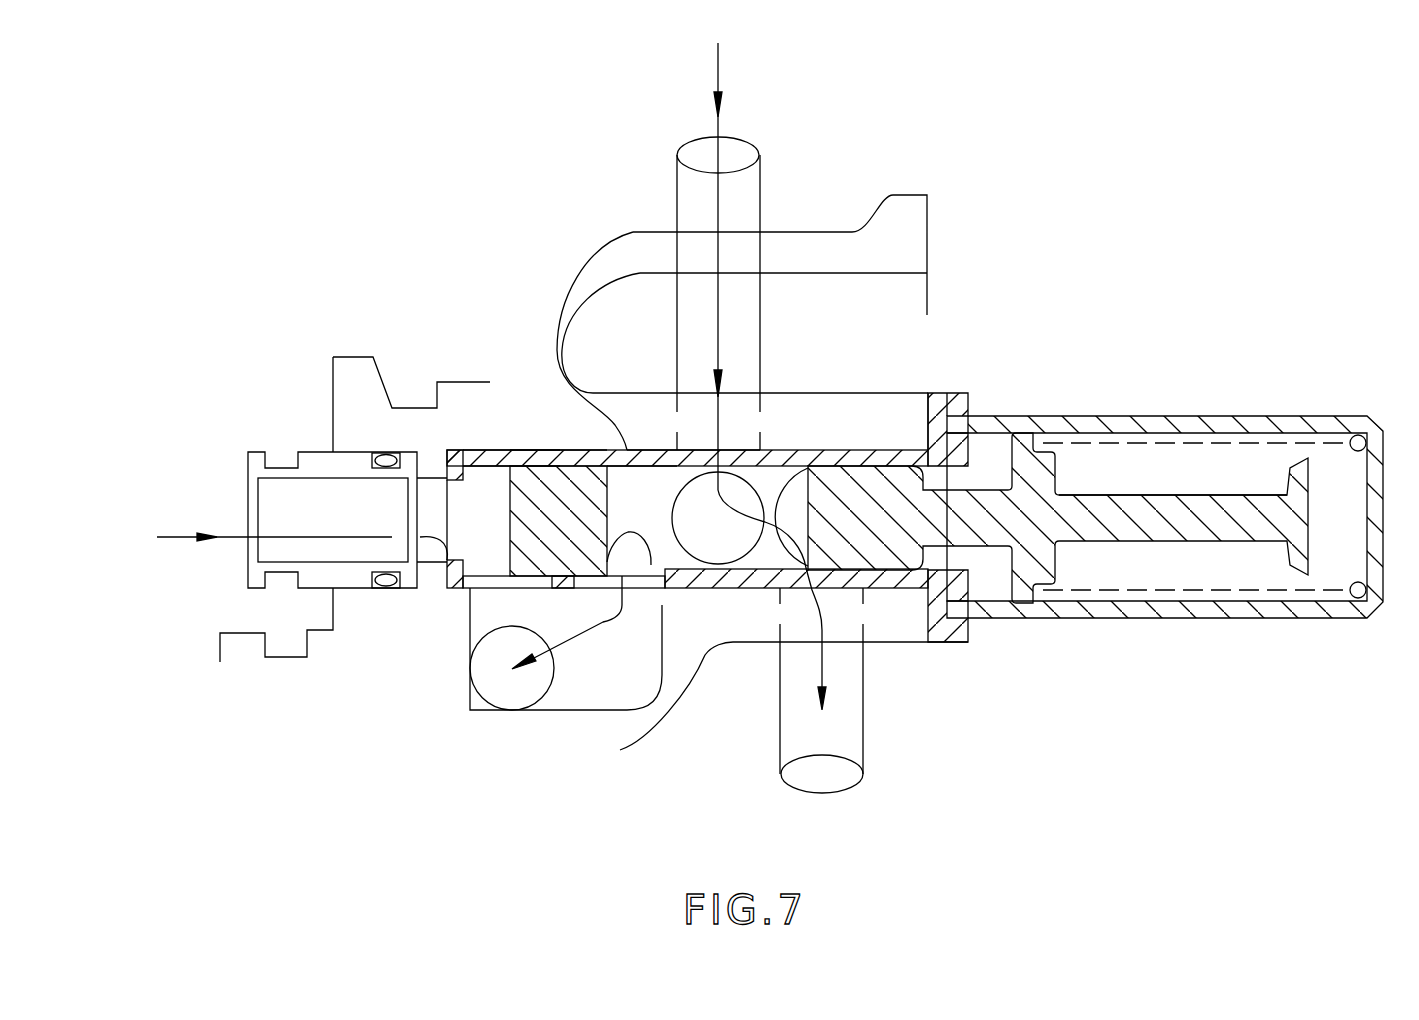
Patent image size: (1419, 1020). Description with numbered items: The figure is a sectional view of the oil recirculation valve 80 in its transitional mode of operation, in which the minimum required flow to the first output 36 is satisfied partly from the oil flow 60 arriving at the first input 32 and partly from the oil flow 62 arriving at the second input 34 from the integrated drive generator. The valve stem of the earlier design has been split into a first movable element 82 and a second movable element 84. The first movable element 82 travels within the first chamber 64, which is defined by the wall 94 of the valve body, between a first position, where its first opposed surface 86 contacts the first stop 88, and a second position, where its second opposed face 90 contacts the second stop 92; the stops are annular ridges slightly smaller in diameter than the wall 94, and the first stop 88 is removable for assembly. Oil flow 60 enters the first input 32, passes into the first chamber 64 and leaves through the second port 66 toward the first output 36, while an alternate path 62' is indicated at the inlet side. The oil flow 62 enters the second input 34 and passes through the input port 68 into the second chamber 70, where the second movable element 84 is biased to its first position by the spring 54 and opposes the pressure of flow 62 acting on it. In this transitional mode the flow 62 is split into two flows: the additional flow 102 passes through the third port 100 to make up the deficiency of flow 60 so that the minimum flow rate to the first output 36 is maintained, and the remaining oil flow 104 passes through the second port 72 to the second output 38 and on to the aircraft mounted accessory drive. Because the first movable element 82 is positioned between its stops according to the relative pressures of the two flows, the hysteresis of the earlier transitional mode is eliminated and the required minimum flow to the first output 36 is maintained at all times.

The first input 32 is at (248, 497).
The second input 34 is at (743, 152).
The first output 36 is at (482, 700).
The second output 38 is at (852, 743).
The spring 54 is at (1200, 590).
The oil flow 60 is at (157, 537).
The oil flow 62 is at (771, 266).
The alternate fluid flow path 62' is at (389, 626).
The first chamber 64 is at (658, 483).
The second port 66 is at (470, 590).
The input port 68 is at (717, 557).
The second chamber 70 is at (550, 453).
The second port 72 is at (800, 492).
The recirculation valve 80 is at (562, 195).
The first movable element 82 is at (513, 450).
The second movable element 84 is at (1213, 497).
The first opposed surface 86 is at (510, 518).
The first stop 88 is at (447, 452).
The second opposed face 90 is at (651, 565).
The second stop 92 is at (679, 450).
The wall 94 is at (514, 450).
The third port 100 is at (663, 588).
The additional flow 102 is at (558, 642).
The remaining oil flow 104 is at (823, 672).